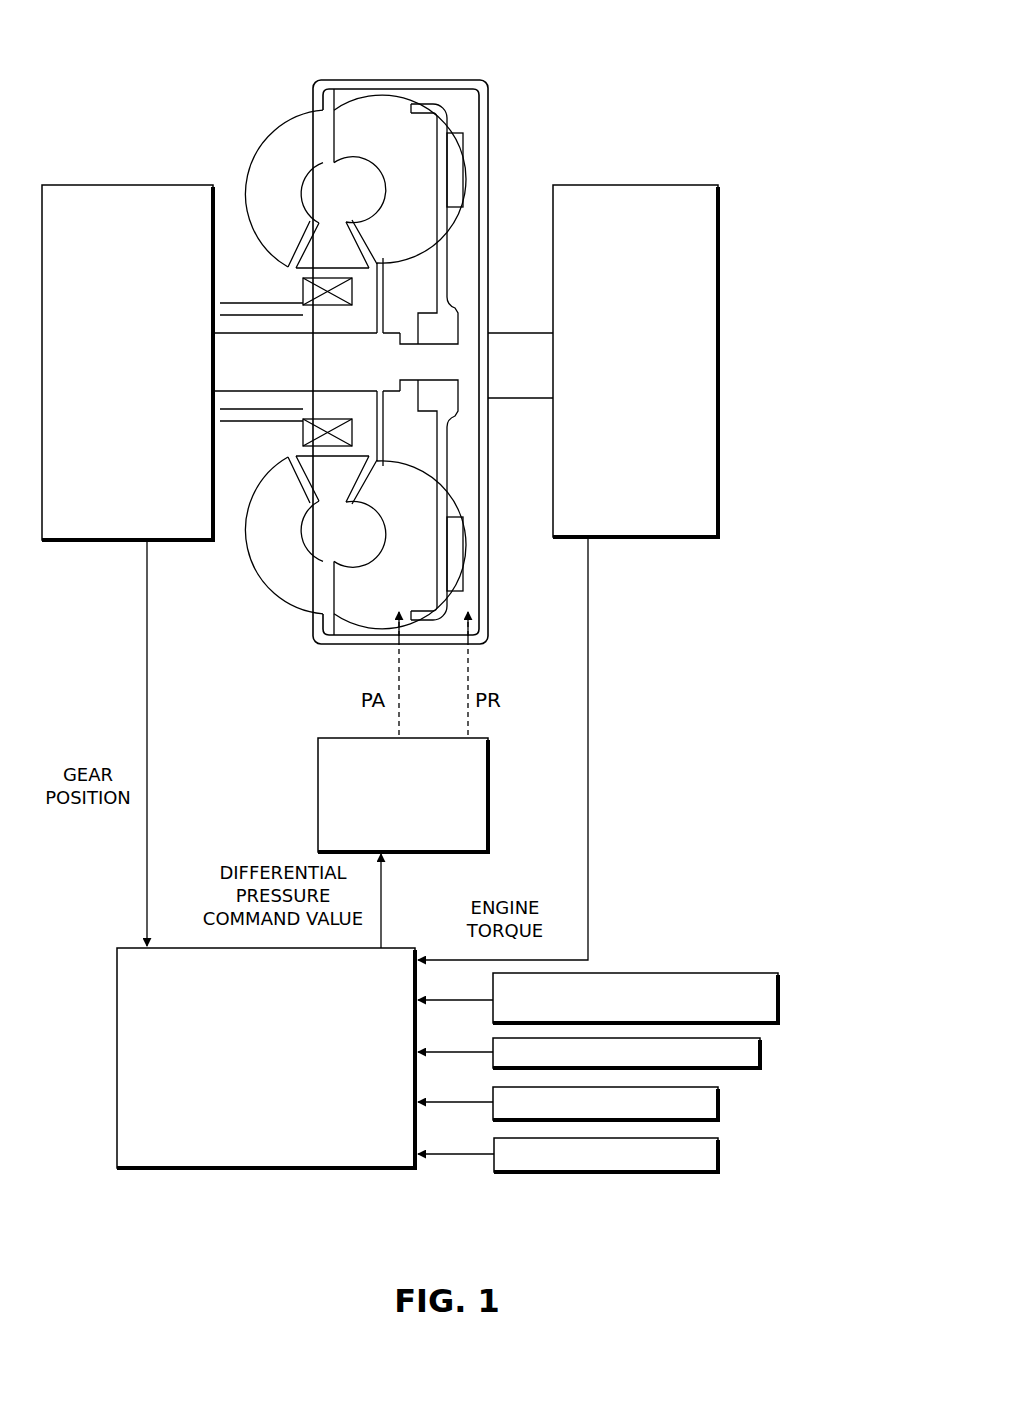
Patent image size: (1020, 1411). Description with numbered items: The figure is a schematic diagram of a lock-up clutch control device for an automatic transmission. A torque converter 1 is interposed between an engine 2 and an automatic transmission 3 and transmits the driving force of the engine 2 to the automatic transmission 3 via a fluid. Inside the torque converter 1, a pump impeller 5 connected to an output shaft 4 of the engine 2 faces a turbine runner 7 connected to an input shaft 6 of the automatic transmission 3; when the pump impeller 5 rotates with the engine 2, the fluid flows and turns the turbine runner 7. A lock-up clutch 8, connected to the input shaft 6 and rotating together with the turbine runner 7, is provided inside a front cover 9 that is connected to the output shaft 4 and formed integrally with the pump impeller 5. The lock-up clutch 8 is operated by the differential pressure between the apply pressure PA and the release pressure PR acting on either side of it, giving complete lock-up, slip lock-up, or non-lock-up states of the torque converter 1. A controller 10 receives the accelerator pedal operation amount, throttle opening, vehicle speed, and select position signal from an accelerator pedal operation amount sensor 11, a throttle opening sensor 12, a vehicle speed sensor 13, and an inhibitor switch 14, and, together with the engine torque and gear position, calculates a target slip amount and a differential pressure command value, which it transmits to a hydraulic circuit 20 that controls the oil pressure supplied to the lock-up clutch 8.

The torque converter 1 is at (504, 79).
The engine 2 is at (645, 185).
The automatic transmission 3 is at (100, 185).
The output shaft 4 is at (516, 333).
The pump impeller 5 is at (269, 132).
The input shaft 6 is at (230, 333).
The turbine runner 7 is at (356, 113).
The lock-up clutch 8 is at (437, 108).
The front cover 9 is at (488, 125).
The controller 10 is at (242, 1168).
The accelerator pedal operation amount sensor 11 is at (780, 998).
The throttle opening sensor 12 is at (762, 1050).
The vehicle speed sensor 13 is at (720, 1100).
The inhibitor switch 14 is at (720, 1153).
The hydraulic circuit 20 is at (480, 782).